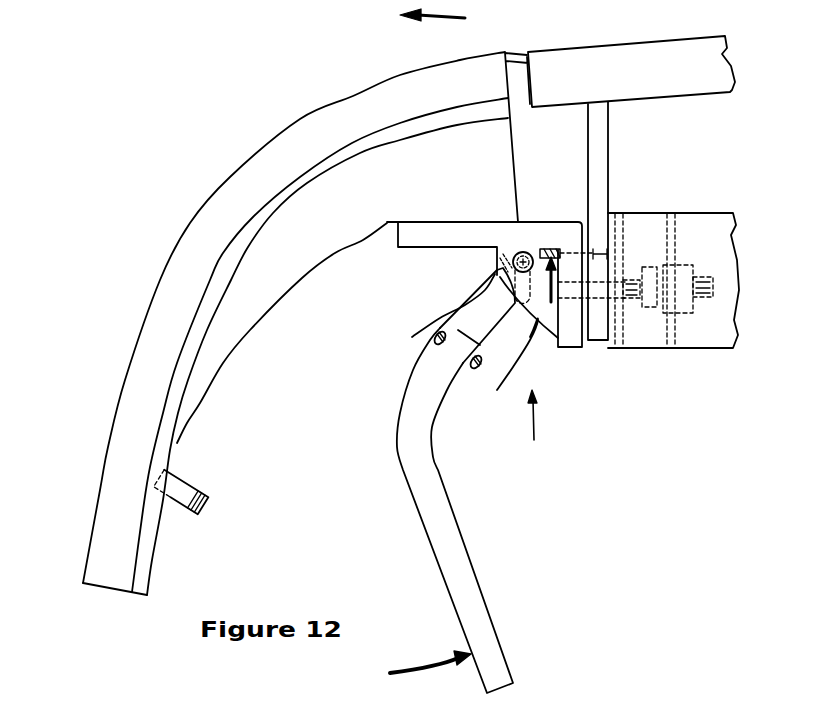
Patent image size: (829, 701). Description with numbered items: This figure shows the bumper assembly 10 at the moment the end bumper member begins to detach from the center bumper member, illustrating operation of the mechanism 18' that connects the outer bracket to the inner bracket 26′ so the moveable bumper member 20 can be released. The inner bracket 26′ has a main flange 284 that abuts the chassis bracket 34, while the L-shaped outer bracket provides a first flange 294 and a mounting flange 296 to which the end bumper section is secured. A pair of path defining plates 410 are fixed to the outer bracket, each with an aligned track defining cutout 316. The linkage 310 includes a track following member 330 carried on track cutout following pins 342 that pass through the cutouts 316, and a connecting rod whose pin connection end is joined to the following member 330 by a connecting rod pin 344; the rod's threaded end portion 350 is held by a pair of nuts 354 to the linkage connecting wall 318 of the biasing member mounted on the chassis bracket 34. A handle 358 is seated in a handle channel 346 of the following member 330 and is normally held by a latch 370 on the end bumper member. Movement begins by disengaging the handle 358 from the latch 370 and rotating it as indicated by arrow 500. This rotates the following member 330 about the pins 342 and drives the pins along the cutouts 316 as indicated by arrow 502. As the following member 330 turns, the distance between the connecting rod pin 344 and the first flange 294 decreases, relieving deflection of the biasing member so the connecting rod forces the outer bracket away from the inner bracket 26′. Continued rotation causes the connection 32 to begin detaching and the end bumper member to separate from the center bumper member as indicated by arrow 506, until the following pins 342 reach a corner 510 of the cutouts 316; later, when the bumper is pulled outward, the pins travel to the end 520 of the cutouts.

The vehicle body structure 10 is at (296, 79).
The moveable bumper member 20 is at (232, 202).
The connection 32 is at (524, 40).
The arrow 506 is at (465, 18).
The main flange 284 is at (605, 130).
The mounting flange 296 is at (523, 247).
The inner bracket 26′ is at (600, 183).
The chassis bracket 34 is at (712, 222).
The threaded end portion 350 is at (627, 290).
The nuts 354 is at (688, 273).
The linkage connecting wall 318 is at (673, 333).
The track cutout following pins 342 is at (523, 250).
The corner 510 is at (505, 250).
The end 520 is at (553, 248).
The linkage 310 is at (468, 259).
The track defining cutout 316 is at (492, 269).
The track following member 330 is at (412, 337).
The handle channel 346 is at (440, 337).
The connecting rod pin 344 is at (448, 377).
The path defining plates 410 is at (516, 347).
The handle 358 is at (478, 623).
The arrow 502 is at (560, 295).
The first flange 294 is at (582, 347).
The mechanism 18' is at (545, 428).
The arrow 500 is at (422, 666).
The latch 370 is at (200, 513).